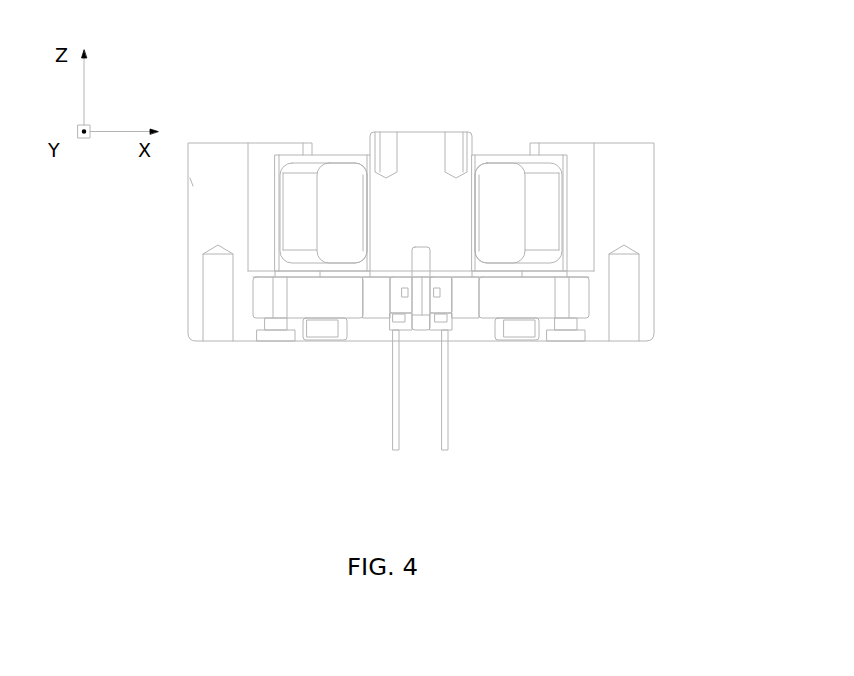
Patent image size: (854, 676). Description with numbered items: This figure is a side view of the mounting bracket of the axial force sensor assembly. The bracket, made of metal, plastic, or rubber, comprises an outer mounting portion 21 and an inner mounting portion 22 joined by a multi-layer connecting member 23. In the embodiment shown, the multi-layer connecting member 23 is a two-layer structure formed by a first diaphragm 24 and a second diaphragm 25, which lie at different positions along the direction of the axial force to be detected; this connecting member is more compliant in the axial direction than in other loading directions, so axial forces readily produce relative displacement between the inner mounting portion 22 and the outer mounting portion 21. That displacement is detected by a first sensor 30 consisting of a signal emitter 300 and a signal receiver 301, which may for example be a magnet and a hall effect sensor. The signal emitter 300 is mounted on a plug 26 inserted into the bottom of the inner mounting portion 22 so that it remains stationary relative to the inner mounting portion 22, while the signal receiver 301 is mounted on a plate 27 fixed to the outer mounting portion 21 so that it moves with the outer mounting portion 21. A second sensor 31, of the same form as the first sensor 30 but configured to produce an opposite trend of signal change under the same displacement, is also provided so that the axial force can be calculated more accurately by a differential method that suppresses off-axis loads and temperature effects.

The outer mounting portion 21 is at (617, 163).
The inner mounting portion 22 is at (423, 150).
The multi-layer connecting member 23 is at (434, 135).
The first diaphragm 24 is at (495, 157).
The second diaphragm 25 is at (510, 267).
The plug 26 is at (420, 263).
The plate 27 is at (507, 293).
The first sensor 30 is at (349, 395).
The signal emitter 300 is at (397, 290).
The signal receiver 301 is at (417, 289).
The second sensor 31 is at (461, 305).